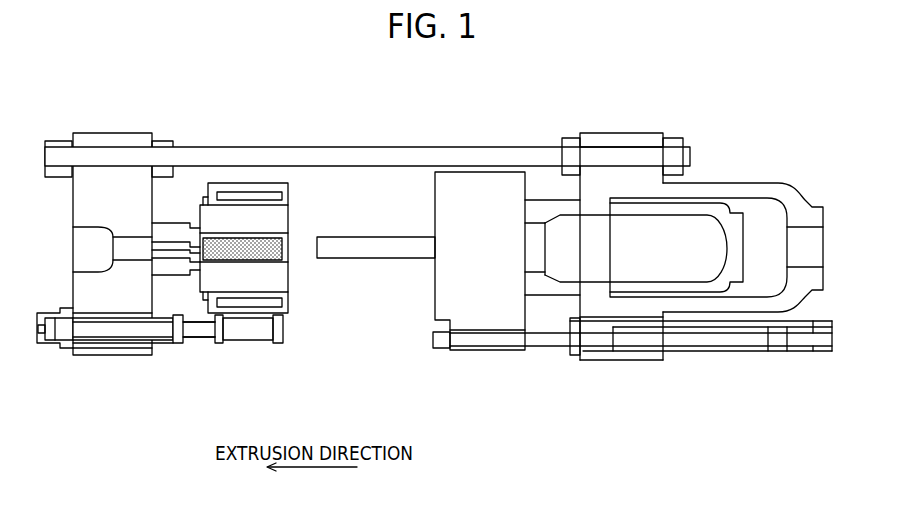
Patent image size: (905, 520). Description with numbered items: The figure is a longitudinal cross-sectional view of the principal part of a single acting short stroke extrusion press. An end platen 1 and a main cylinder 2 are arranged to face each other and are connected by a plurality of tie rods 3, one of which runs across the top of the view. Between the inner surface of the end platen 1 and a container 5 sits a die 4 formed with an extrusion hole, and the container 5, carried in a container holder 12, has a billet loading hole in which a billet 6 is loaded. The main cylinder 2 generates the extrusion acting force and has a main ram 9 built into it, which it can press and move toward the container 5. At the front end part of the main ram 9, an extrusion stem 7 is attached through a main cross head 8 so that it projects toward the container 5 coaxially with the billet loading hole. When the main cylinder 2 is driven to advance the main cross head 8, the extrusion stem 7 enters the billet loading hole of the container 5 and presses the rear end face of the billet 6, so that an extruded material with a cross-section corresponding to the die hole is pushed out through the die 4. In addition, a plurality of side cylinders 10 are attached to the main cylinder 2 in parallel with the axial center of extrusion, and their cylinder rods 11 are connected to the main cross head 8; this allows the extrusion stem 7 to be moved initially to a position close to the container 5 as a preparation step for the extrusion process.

The end platen 1 is at (110, 140).
The main cylinder 2 is at (716, 194).
The tie rod 3 is at (403, 158).
The die 4 is at (177, 268).
The container 5 is at (262, 275).
The billet 6 is at (240, 250).
The extrusion stem 7 is at (387, 247).
The main cross head 8 is at (480, 312).
The main ram 9 is at (542, 213).
The side cylinder 10 is at (778, 333).
The cylinder rod 11 is at (550, 333).
The container holder 12 is at (252, 186).